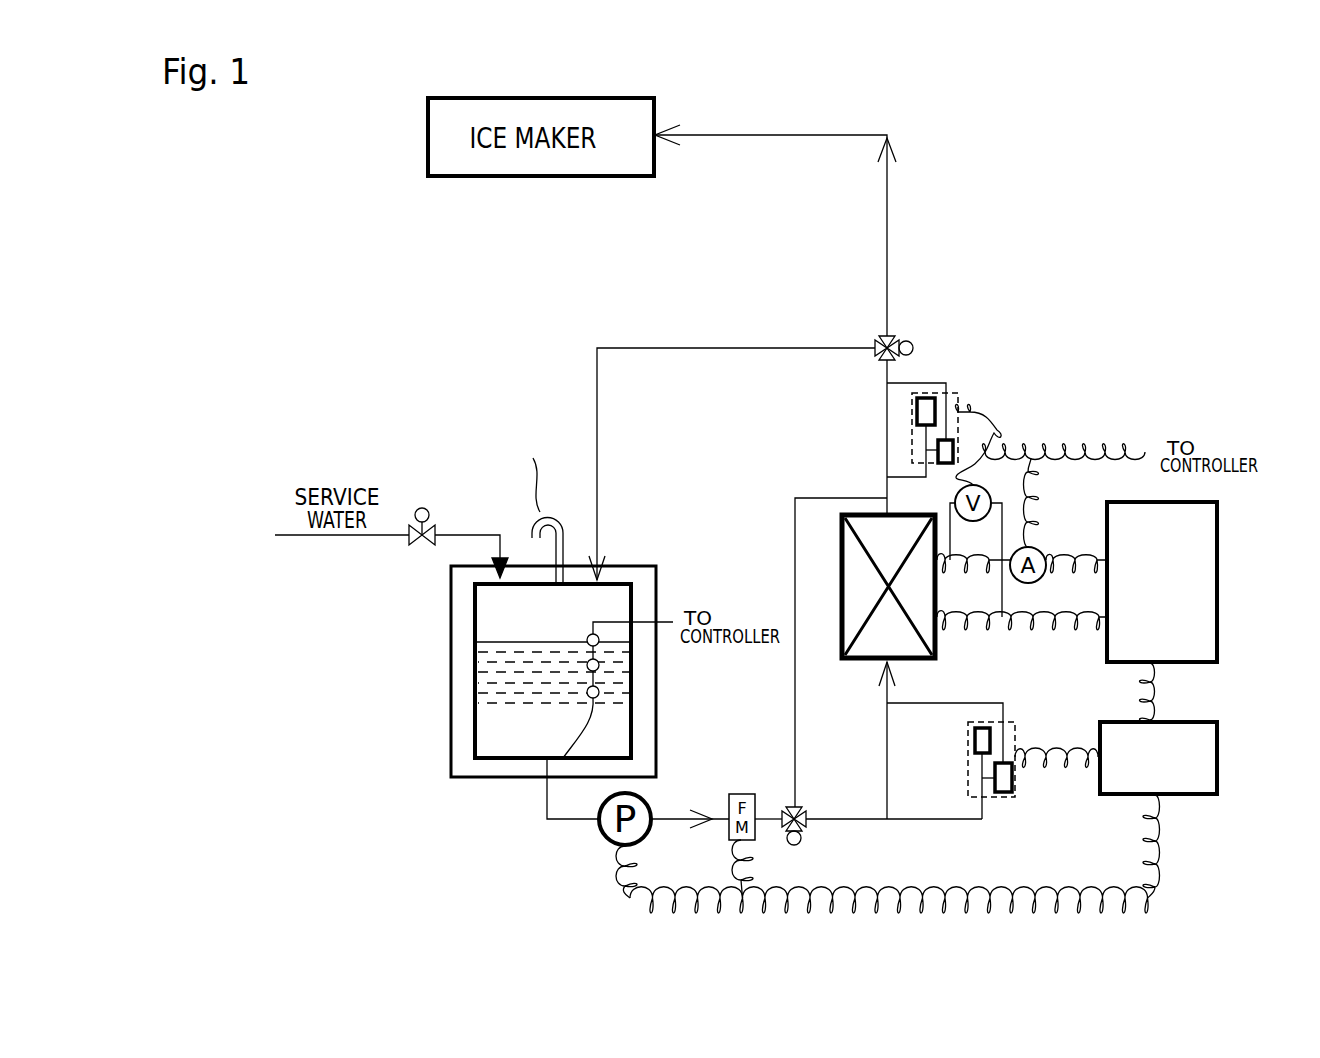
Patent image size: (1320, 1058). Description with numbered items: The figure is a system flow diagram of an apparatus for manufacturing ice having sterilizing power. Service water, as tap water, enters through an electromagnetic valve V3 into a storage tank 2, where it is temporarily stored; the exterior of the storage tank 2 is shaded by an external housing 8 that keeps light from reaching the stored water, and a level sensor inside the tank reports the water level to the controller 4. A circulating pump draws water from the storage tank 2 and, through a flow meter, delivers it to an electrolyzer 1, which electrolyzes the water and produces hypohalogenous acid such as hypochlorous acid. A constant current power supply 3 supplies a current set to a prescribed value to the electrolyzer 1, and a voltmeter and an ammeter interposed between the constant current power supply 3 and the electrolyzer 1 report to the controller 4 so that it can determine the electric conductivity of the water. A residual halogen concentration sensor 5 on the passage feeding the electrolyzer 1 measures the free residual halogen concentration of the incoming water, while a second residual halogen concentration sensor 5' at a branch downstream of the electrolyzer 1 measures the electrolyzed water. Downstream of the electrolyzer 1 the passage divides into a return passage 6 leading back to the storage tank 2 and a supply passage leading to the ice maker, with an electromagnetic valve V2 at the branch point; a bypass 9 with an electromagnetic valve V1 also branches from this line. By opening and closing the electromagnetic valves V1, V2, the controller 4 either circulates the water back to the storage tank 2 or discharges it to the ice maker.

The electrolyzer 1 is at (925, 632).
The storage tank 2 is at (444, 676).
The constant current power supply 3 is at (1218, 582).
The controller 4 is at (1218, 757).
The residual halogen concentration sensor 5 is at (982, 776).
The residual halogen concentration sensor 5' is at (964, 413).
The return passage 6 is at (719, 347).
The external housing 8 is at (451, 626).
The bypass 9 is at (795, 530).
The electromagnetic valve V1 is at (812, 810).
The electromagnetic valve V2 is at (875, 333).
The electromagnetic valve V3 is at (423, 510).